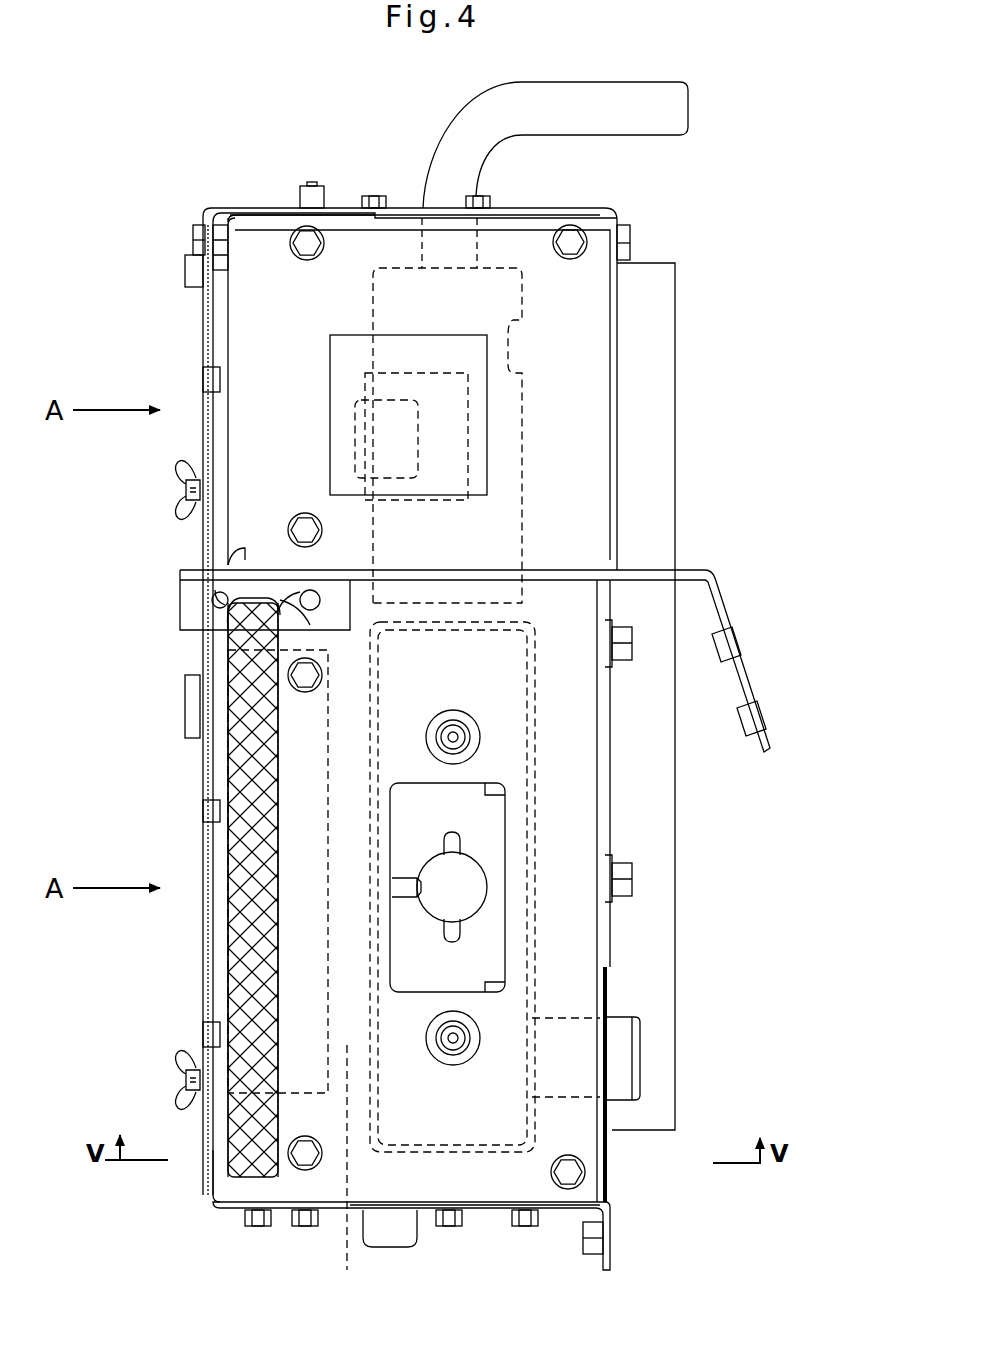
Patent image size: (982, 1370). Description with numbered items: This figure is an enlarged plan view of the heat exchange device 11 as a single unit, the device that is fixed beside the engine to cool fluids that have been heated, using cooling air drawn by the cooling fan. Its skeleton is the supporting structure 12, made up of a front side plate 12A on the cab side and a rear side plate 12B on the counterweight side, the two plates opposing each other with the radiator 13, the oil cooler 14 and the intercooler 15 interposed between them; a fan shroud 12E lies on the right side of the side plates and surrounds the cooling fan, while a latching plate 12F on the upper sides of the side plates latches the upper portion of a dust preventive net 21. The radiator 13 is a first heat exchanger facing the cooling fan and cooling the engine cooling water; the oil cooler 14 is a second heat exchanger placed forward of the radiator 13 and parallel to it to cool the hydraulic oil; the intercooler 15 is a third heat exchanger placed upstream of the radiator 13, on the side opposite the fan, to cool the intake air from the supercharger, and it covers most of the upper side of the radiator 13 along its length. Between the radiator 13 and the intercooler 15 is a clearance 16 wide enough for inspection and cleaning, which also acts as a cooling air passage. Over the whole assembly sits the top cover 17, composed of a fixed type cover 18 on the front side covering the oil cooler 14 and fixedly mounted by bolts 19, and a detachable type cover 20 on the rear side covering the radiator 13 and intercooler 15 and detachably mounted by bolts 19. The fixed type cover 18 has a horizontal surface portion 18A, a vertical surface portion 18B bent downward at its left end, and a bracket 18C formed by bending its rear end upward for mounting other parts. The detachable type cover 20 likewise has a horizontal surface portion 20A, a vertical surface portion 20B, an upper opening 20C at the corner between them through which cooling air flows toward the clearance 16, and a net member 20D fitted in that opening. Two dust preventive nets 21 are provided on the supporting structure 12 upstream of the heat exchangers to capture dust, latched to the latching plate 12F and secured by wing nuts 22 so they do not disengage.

The heat exchange device 11 is at (700, 268).
The supporting structure 12 is at (403, 208).
The front side plate 12A is at (330, 208).
The rear side plate 12B is at (490, 1210).
The fan shroud 12E is at (660, 812).
The latching plate 12F is at (205, 760).
The radiator 13 is at (535, 945).
The oil cooler 14 is at (522, 453).
The intercooler 15 is at (240, 916).
The clearance 16 is at (374, 1171).
The top cover 17 is at (250, 486).
The fixed type cover 18 is at (252, 336).
The horizontal surface portion 18A is at (265, 300).
The vertical surface portion 18B is at (228, 535).
The bracket 18C is at (730, 612).
The bolts 19 is at (305, 243).
The detachable type cover 20 is at (335, 947).
The horizontal surface portion 20A is at (568, 997).
The vertical surface portion 20B is at (210, 1195).
The upper opening 20C is at (240, 850).
The net member 20D is at (240, 1005).
The dust preventive nets 21 is at (205, 395).
The wing nuts 22 is at (188, 490).